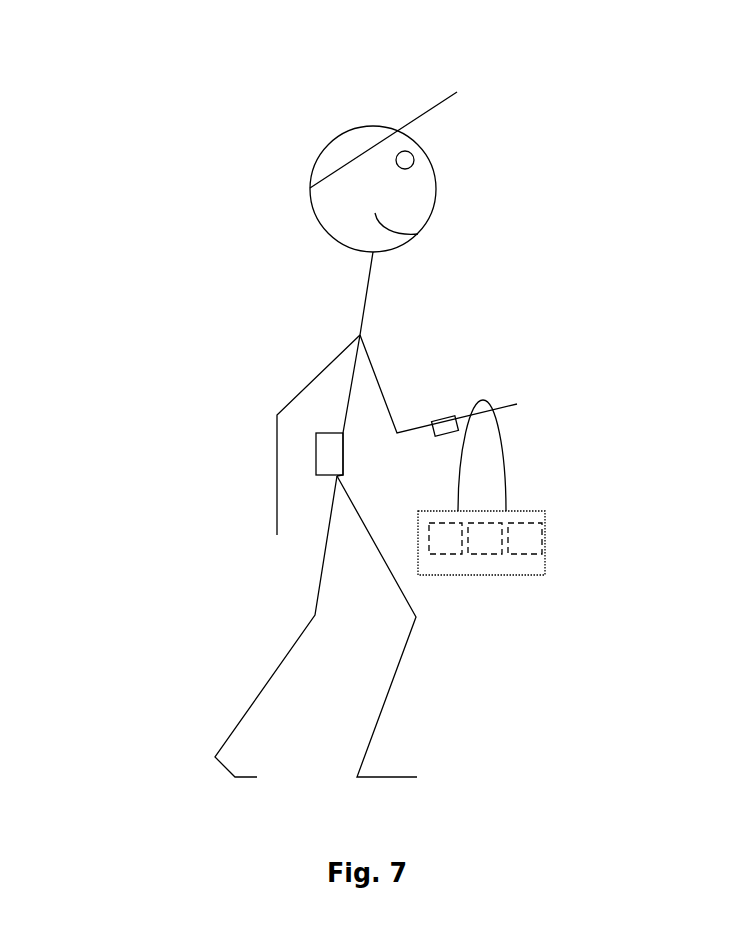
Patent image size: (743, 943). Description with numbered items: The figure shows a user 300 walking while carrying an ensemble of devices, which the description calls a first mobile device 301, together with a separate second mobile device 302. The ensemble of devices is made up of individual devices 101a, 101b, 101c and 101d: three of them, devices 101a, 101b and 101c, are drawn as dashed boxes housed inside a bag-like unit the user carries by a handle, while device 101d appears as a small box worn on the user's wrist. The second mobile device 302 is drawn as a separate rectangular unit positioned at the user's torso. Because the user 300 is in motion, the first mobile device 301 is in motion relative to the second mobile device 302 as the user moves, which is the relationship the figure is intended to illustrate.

The user 300 is at (87, 286).
The first mobile device 301 is at (316, 465).
The second mobile device 302 is at (546, 511).
The device 101a is at (446, 555).
The device 101b is at (501, 548).
The device 101c is at (540, 555).
The device 101d is at (457, 412).